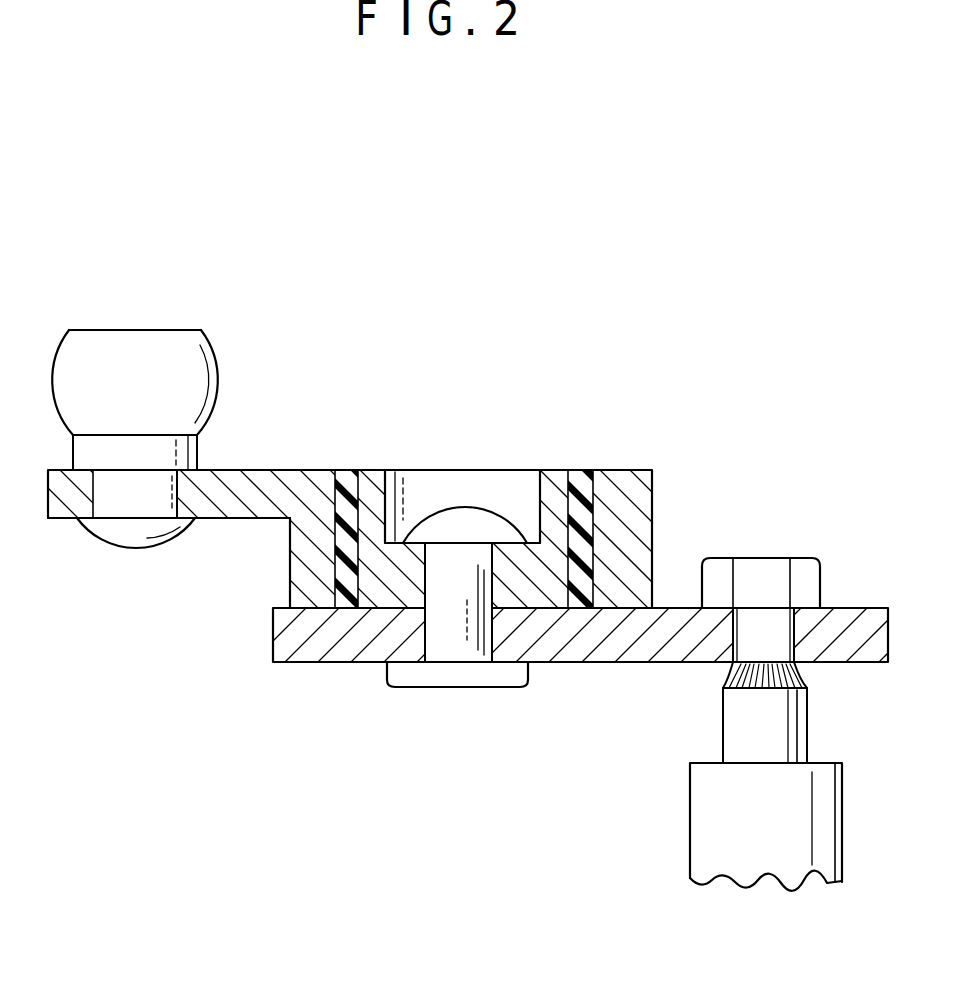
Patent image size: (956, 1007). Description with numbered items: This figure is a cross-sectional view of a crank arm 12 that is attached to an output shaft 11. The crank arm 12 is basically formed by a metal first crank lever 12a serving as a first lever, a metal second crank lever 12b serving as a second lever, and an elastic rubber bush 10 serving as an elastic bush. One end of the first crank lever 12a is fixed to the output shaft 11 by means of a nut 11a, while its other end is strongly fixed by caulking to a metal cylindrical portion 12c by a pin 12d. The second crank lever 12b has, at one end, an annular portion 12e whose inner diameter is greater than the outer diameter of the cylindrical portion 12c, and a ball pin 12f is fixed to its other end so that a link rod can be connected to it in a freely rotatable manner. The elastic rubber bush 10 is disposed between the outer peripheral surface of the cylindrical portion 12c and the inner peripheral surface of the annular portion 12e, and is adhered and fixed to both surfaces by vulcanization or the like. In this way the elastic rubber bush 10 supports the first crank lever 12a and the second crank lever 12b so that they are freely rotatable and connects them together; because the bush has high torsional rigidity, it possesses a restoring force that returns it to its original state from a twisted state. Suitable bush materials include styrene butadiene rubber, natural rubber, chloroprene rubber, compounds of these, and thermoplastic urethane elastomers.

The elastic rubber bush 10 is at (585, 477).
The output shaft 11 is at (797, 725).
The nut 11a is at (807, 573).
The crank arm 12 is at (633, 458).
The first crank lever 12a is at (280, 648).
The second crank lever 12b is at (283, 487).
The cylindrical portion 12c is at (525, 573).
The pin 12d is at (448, 677).
The annular portion 12e is at (358, 548).
The ball pin 12f is at (177, 341).